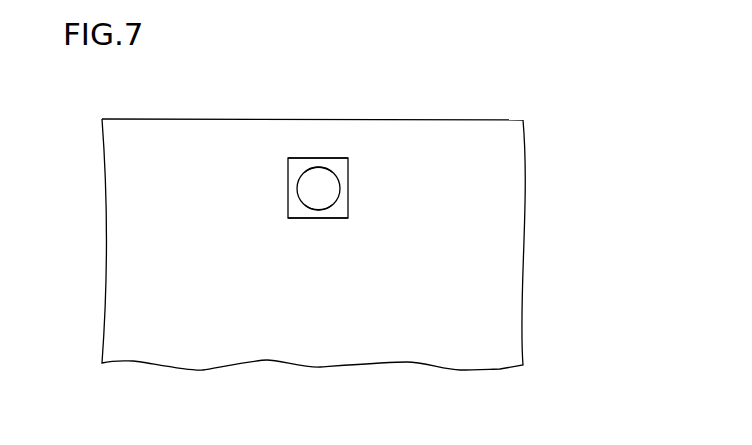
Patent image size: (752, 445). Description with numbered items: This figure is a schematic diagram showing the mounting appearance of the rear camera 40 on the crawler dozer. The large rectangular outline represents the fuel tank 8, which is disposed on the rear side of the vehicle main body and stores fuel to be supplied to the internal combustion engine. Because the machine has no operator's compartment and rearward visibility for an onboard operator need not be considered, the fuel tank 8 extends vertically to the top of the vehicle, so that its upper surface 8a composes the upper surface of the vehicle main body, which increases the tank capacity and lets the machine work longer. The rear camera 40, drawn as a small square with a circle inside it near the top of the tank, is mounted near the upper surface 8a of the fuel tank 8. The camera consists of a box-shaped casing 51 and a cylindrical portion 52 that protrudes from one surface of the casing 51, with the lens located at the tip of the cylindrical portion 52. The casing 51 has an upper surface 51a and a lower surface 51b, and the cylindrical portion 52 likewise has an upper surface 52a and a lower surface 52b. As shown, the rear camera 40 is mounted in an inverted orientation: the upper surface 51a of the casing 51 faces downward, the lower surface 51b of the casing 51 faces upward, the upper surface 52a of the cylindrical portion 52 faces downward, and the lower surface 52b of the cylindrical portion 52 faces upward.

The fuel tank 8 is at (465, 140).
The upper surface of fuel tank 8a is at (140, 119).
The rear camera 40 is at (301, 246).
The casing 51 is at (295, 168).
The upper surface of casing 51a is at (332, 220).
The lower surface of casing 51b is at (313, 166).
The cylindrical portion 52 is at (297, 188).
The upper surface of cylindrical portion 52a is at (318, 210).
The lower surface of cylindrical portion 52b is at (318, 166).